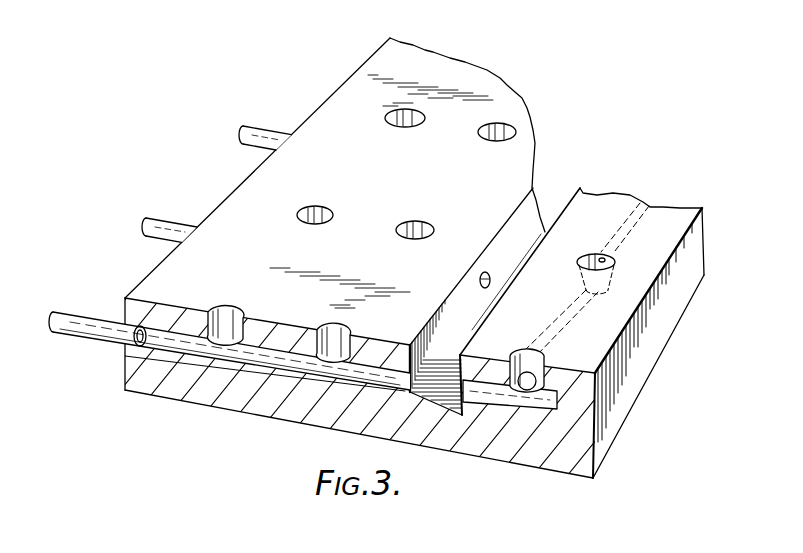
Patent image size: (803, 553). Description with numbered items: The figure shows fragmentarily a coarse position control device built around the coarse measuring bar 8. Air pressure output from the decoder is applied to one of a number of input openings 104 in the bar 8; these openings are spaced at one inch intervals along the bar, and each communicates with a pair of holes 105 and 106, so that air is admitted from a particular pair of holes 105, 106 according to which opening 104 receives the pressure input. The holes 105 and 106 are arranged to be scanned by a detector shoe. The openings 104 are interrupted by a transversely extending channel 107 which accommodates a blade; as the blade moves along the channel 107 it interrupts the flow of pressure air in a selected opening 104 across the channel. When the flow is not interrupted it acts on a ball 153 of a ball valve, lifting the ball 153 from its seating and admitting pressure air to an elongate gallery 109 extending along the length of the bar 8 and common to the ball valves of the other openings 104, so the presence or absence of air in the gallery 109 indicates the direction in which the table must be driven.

The coarse measuring bar 8 is at (165, 277).
The input openings 104 is at (287, 127).
The hole 105 is at (387, 122).
The hole 106 is at (478, 133).
The channel 107 is at (493, 257).
The gallery 109 is at (570, 303).
The ball 153 is at (545, 373).